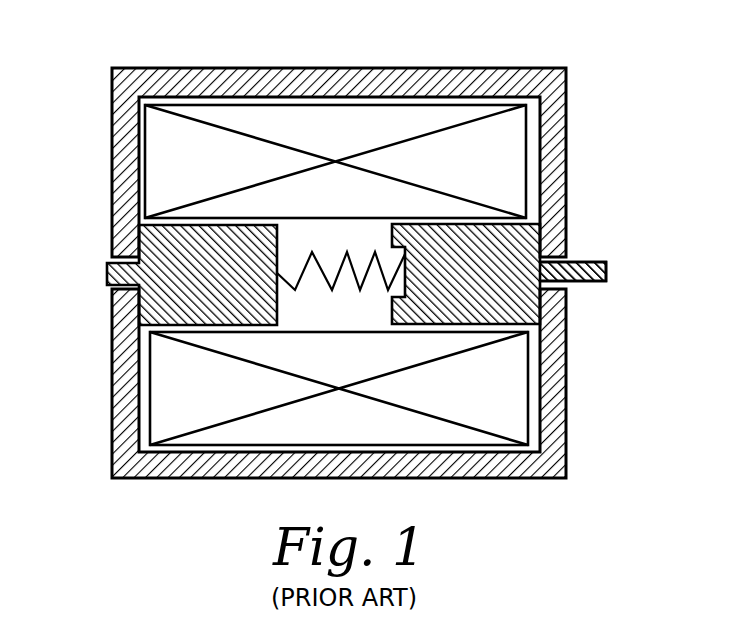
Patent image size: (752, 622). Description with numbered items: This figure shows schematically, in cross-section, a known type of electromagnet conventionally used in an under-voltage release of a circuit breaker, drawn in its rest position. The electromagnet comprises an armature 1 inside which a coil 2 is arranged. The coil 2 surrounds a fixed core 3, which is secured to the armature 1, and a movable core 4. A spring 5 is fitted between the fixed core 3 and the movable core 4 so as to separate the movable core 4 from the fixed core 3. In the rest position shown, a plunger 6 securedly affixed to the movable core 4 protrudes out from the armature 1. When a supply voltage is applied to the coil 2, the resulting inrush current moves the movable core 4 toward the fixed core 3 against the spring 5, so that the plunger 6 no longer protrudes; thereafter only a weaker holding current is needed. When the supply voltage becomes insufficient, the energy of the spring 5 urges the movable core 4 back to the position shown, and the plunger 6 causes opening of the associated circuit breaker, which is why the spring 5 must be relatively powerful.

The armature 1 is at (552, 68).
The coil 2 is at (508, 405).
The fixed core 3 is at (175, 292).
The movable core 4 is at (522, 312).
The spring 5 is at (378, 288).
The plunger 6 is at (584, 262).